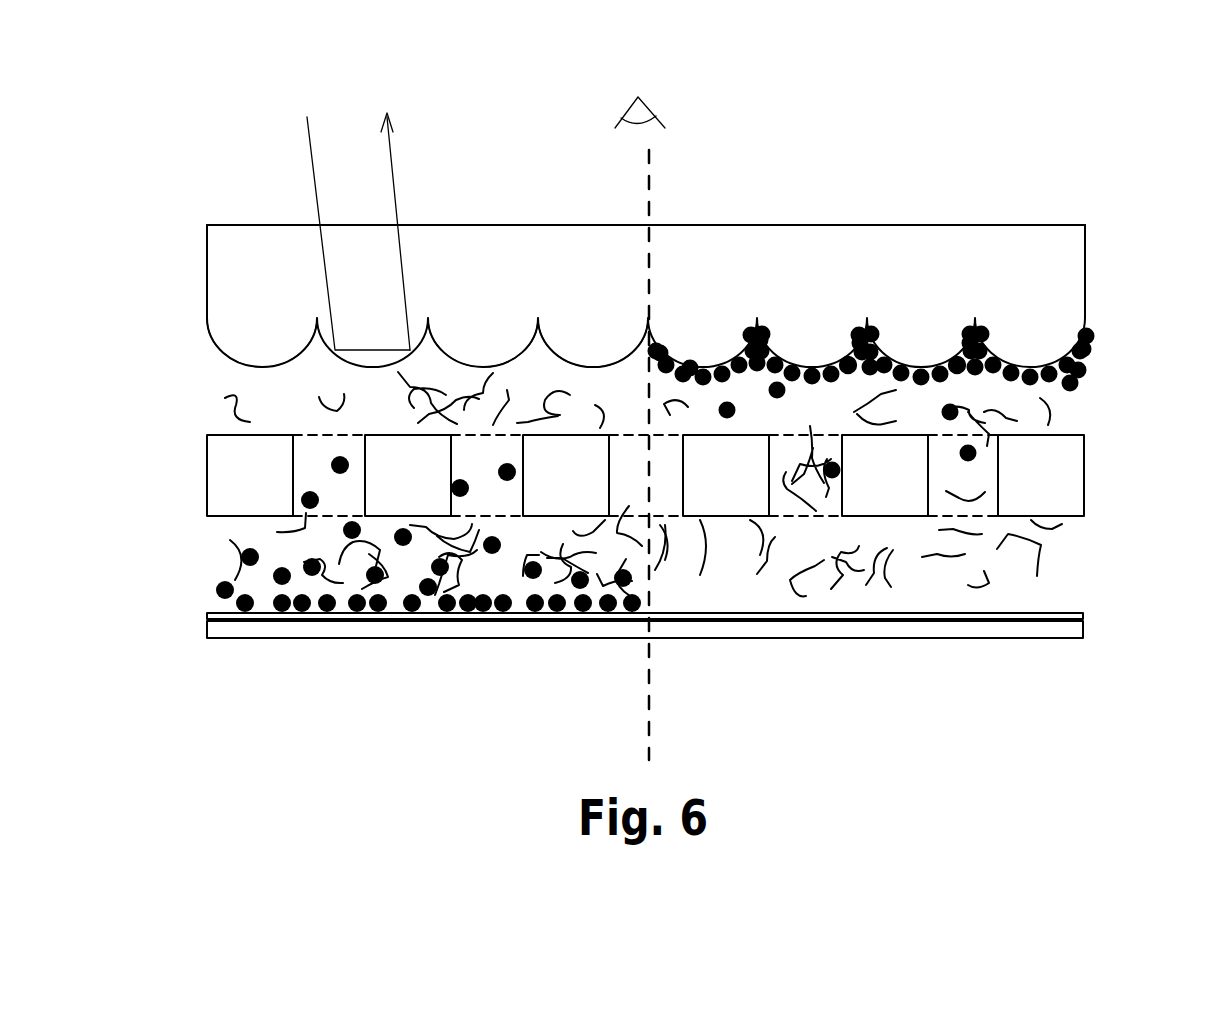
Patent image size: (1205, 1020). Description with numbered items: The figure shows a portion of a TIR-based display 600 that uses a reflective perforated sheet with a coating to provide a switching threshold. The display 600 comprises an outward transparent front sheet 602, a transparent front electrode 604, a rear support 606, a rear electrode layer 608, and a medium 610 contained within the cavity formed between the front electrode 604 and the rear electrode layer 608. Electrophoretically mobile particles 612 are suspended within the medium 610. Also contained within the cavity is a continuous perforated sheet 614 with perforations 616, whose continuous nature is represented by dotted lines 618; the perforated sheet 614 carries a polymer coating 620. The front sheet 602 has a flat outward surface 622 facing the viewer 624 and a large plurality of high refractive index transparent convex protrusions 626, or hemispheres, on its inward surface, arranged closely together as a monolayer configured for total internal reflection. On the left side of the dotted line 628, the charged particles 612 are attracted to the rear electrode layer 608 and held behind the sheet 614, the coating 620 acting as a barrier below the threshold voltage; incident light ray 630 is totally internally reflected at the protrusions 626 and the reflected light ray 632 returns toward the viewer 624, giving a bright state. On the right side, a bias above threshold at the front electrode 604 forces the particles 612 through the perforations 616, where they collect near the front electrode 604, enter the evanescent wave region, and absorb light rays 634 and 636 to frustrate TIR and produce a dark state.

The display 600 is at (983, 204).
The outward transparent front sheet 602 is at (287, 308).
The transparent front electrode 604 is at (218, 356).
The rear support 606 is at (837, 638).
The rear electrode layer 608 is at (1058, 613).
The medium 610 is at (345, 393).
The electrophoretically mobile particles 612 is at (1072, 385).
The continuous perforated sheet 614 is at (276, 492).
The perforations 616 is at (690, 530).
The dotted lines 618 is at (820, 525).
The coating 620 is at (617, 402).
The flat outward surface 622 is at (222, 225).
The viewer 624 is at (658, 112).
The transparent convex protrusions 626 is at (598, 342).
The dotted line 628 is at (650, 185).
The light ray 630 is at (315, 195).
The reflected light ray 632 is at (398, 208).
The light ray 634 is at (850, 346).
The light ray 636 is at (958, 353).